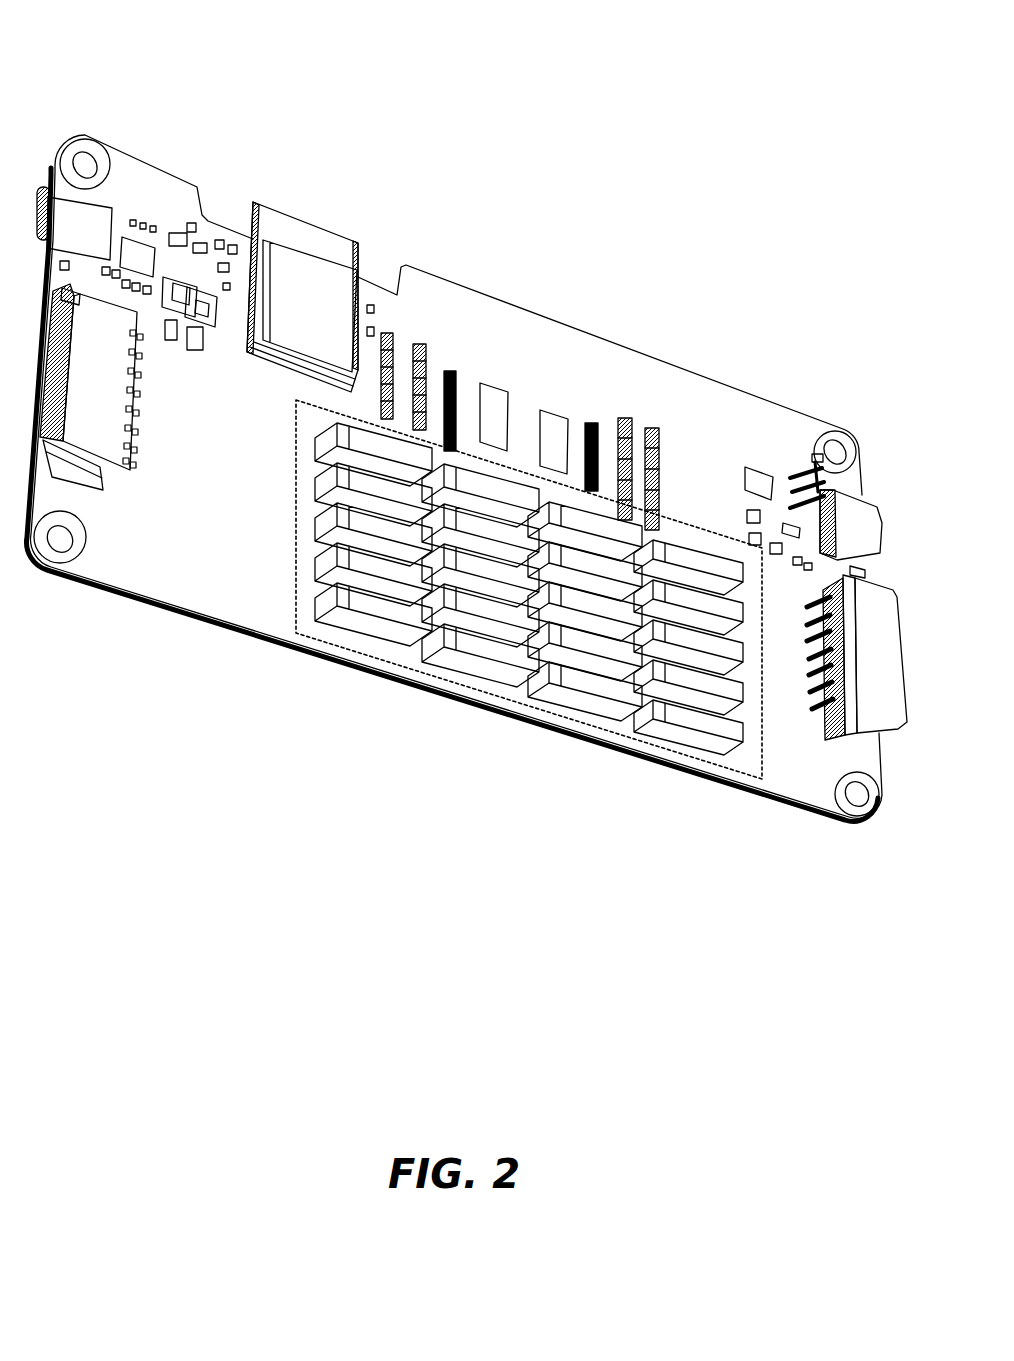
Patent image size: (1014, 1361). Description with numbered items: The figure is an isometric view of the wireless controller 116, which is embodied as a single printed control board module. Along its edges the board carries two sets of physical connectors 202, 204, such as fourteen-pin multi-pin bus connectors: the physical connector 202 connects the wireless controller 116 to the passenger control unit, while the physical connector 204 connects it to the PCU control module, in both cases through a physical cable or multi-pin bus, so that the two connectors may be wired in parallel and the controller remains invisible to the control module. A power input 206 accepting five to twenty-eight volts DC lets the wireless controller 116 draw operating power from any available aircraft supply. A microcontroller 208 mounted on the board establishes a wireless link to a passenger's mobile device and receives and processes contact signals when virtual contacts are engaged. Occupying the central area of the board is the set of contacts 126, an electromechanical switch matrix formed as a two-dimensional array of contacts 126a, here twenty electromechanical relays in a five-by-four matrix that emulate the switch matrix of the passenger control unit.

The wireless controller 116 is at (165, 43).
The set of contacts 126 is at (527, 703).
The contacts 126a is at (498, 647).
The physical connector 202 is at (102, 437).
The physical connector 204 is at (882, 702).
The power input 206 is at (857, 527).
The microcontroller 208 is at (313, 308).